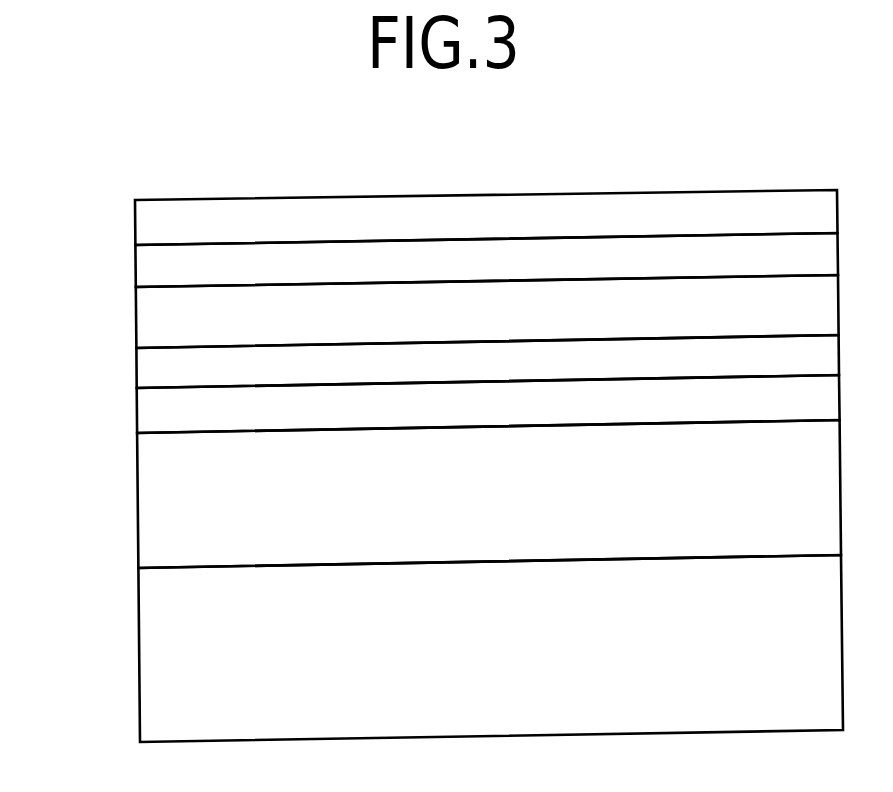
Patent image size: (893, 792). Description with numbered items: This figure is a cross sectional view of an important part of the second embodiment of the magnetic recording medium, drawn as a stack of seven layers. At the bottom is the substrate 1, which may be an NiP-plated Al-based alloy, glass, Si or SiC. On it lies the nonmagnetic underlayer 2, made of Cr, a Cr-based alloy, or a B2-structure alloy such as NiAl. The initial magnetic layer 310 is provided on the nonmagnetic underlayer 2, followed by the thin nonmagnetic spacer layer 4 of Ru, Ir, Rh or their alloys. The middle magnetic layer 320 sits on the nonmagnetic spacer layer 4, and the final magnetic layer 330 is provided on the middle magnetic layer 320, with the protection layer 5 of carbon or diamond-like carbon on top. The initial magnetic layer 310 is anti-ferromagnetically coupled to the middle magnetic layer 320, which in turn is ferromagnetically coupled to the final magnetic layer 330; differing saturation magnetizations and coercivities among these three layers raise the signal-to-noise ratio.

The substrate 1 is at (139, 660).
The nonmagnetic underlayer 2 is at (138, 505).
The initial magnetic layer 310 is at (136, 417).
The nonmagnetic spacer layer 4 is at (136, 375).
The middle magnetic layer 320 is at (136, 323).
The final magnetic layer 330 is at (135, 268).
The protection layer 5 is at (135, 228).